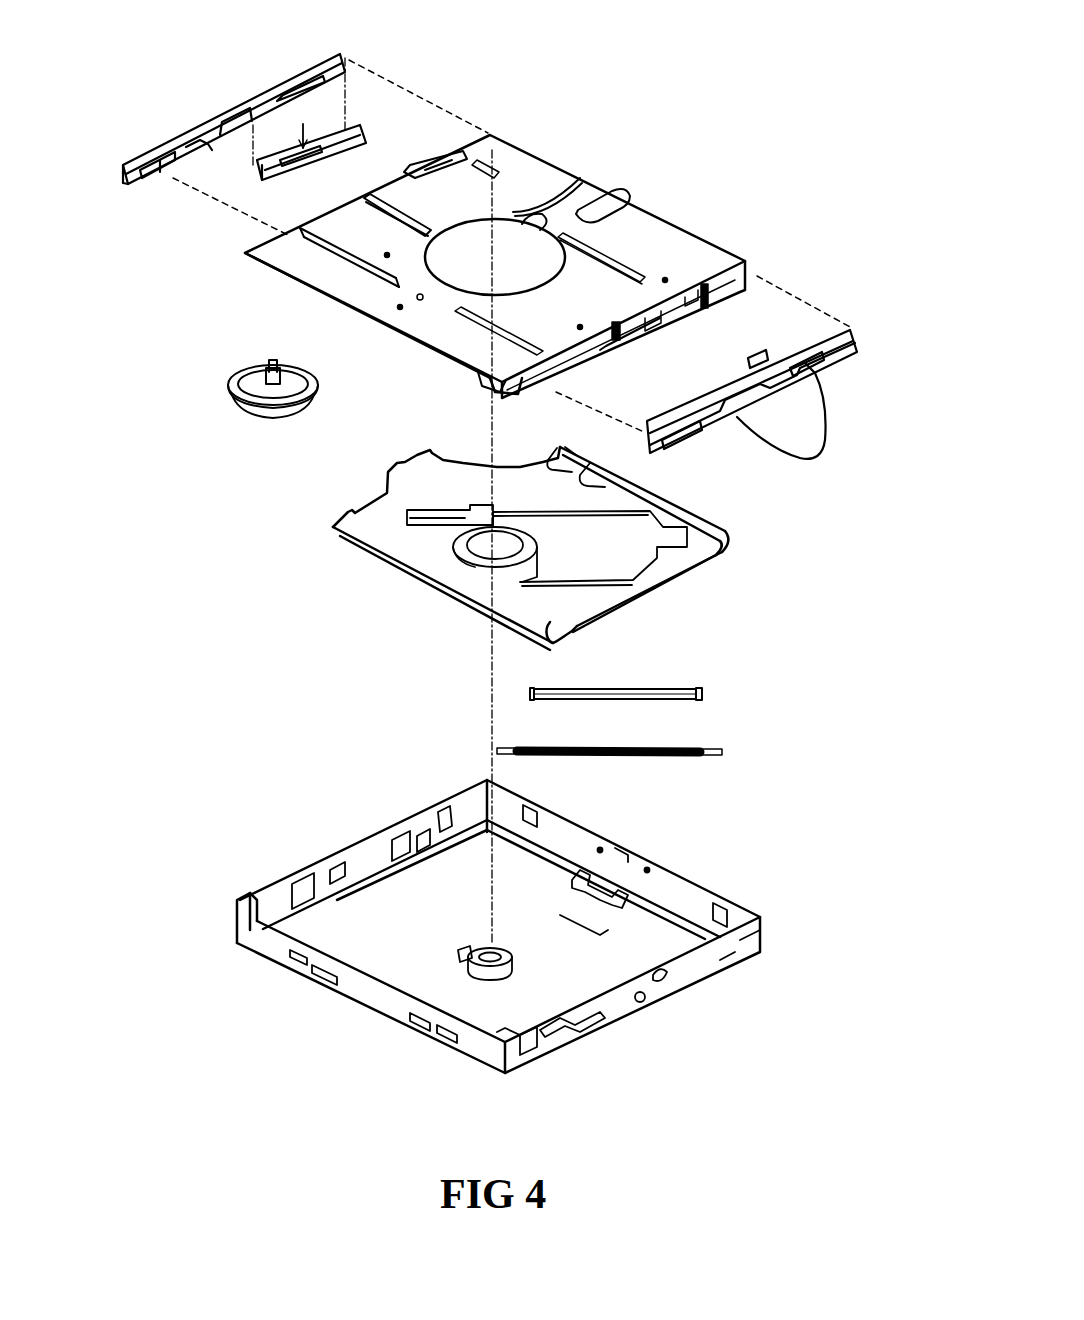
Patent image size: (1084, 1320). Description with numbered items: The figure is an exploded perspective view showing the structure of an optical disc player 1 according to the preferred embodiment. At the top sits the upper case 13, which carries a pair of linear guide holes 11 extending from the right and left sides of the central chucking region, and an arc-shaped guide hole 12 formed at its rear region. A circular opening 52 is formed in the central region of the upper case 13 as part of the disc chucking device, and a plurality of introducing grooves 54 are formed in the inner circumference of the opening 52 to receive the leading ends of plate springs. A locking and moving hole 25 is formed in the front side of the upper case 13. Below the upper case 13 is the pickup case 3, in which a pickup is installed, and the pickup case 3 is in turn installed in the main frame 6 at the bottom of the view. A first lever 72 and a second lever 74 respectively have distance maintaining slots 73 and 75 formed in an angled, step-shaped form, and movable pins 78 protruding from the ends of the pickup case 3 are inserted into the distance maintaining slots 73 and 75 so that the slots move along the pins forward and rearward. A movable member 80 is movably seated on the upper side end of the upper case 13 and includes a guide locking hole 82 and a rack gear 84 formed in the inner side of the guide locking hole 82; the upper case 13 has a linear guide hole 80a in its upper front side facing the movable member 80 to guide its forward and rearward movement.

The optical disc player 1 is at (768, 31).
The pickup case 3 is at (360, 533).
The main frame 6 is at (722, 958).
The linear guide holes 11 is at (367, 200).
The arc-shaped guide hole 12 is at (558, 185).
The upper case 13 is at (713, 258).
The locking and moving hole 25 is at (473, 377).
The circular opening 52 is at (505, 244).
The introducing grooves 54 is at (425, 283).
The first lever 72 is at (187, 130).
The distance maintaining slot 73 is at (278, 101).
The second lever 74 is at (857, 350).
The distance maintaining slot 75 is at (795, 424).
The movable pins 78 is at (397, 460).
The movable member 80 is at (350, 131).
The linear guide hole 80a is at (458, 155).
The guide locking hole 82 is at (361, 146).
The rack gear 84 is at (308, 127).